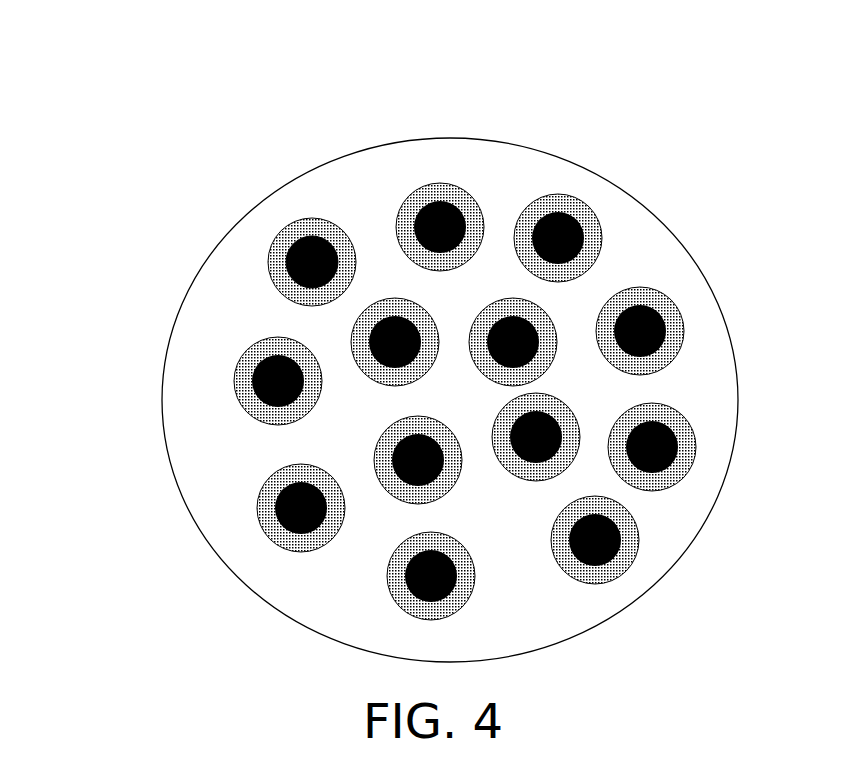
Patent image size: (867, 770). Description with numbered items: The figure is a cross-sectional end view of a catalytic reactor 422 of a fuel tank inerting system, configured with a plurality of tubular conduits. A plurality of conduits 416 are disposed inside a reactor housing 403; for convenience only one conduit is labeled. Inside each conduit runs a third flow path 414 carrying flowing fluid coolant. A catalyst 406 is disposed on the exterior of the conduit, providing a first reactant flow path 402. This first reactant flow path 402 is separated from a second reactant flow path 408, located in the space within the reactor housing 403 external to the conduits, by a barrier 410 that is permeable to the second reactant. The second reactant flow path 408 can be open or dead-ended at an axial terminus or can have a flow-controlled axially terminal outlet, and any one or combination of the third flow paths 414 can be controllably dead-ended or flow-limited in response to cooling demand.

The reactor 422 is at (130, 40).
The reactor housing 403 is at (595, 170).
The second reactant flow path 408 is at (372, 190).
The first reactant flow path 402 is at (283, 287).
The catalyst 406 is at (290, 238).
The barrier 410 is at (268, 267).
The third flow path 414 is at (318, 240).
The conduit 416 is at (303, 236).